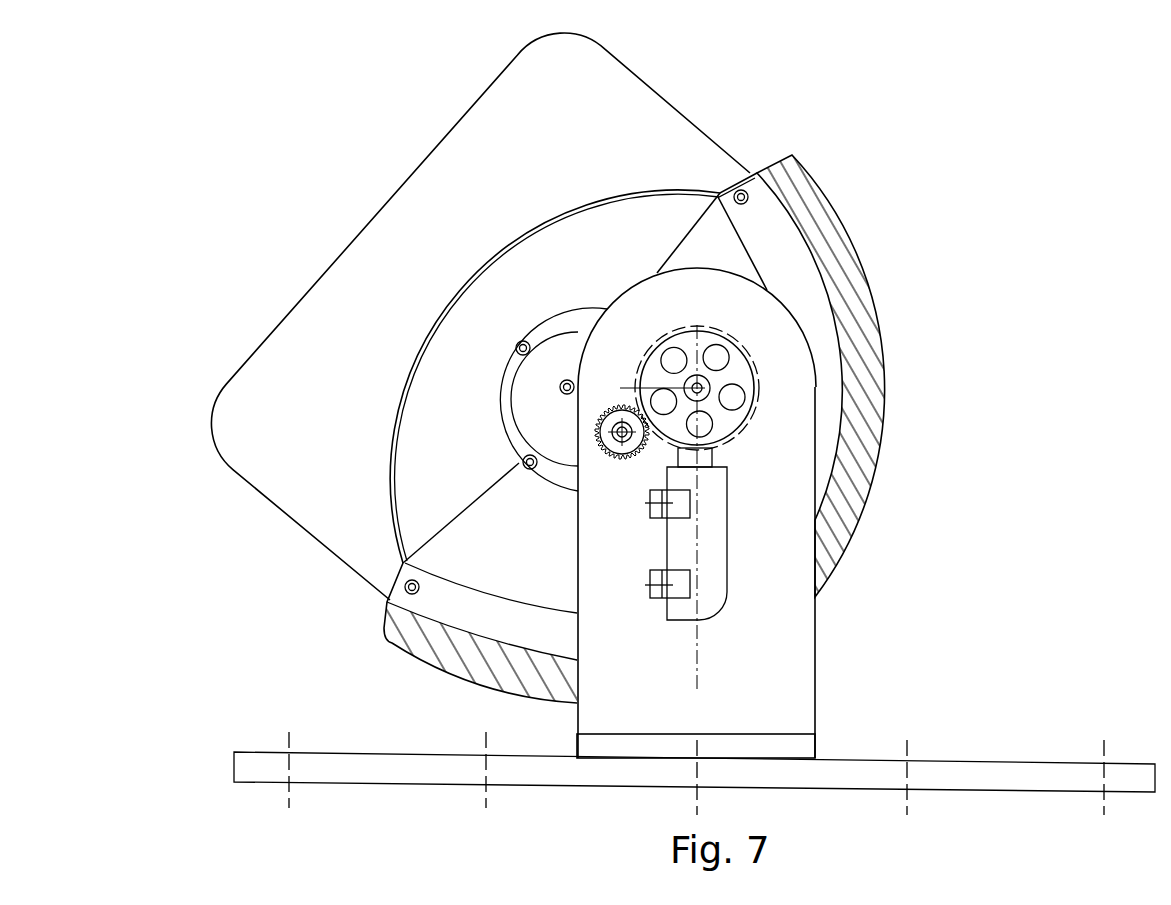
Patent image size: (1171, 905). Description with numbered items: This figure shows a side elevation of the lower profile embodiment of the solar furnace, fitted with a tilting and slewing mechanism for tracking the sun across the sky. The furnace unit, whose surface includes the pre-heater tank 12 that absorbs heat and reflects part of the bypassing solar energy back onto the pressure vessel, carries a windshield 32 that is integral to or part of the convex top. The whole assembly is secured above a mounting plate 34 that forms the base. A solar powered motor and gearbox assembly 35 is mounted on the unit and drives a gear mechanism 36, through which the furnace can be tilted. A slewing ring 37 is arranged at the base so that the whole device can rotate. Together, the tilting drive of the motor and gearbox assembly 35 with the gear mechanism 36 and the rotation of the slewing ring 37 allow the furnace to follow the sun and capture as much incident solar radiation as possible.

The pre-heater tank 12 is at (757, 242).
The windshield 32 is at (580, 147).
The mounting plate 34 is at (928, 773).
The solar powered motor and gearbox assembly 35 is at (713, 543).
The gear mechanism 36 is at (595, 423).
The slewing ring 37 is at (757, 747).